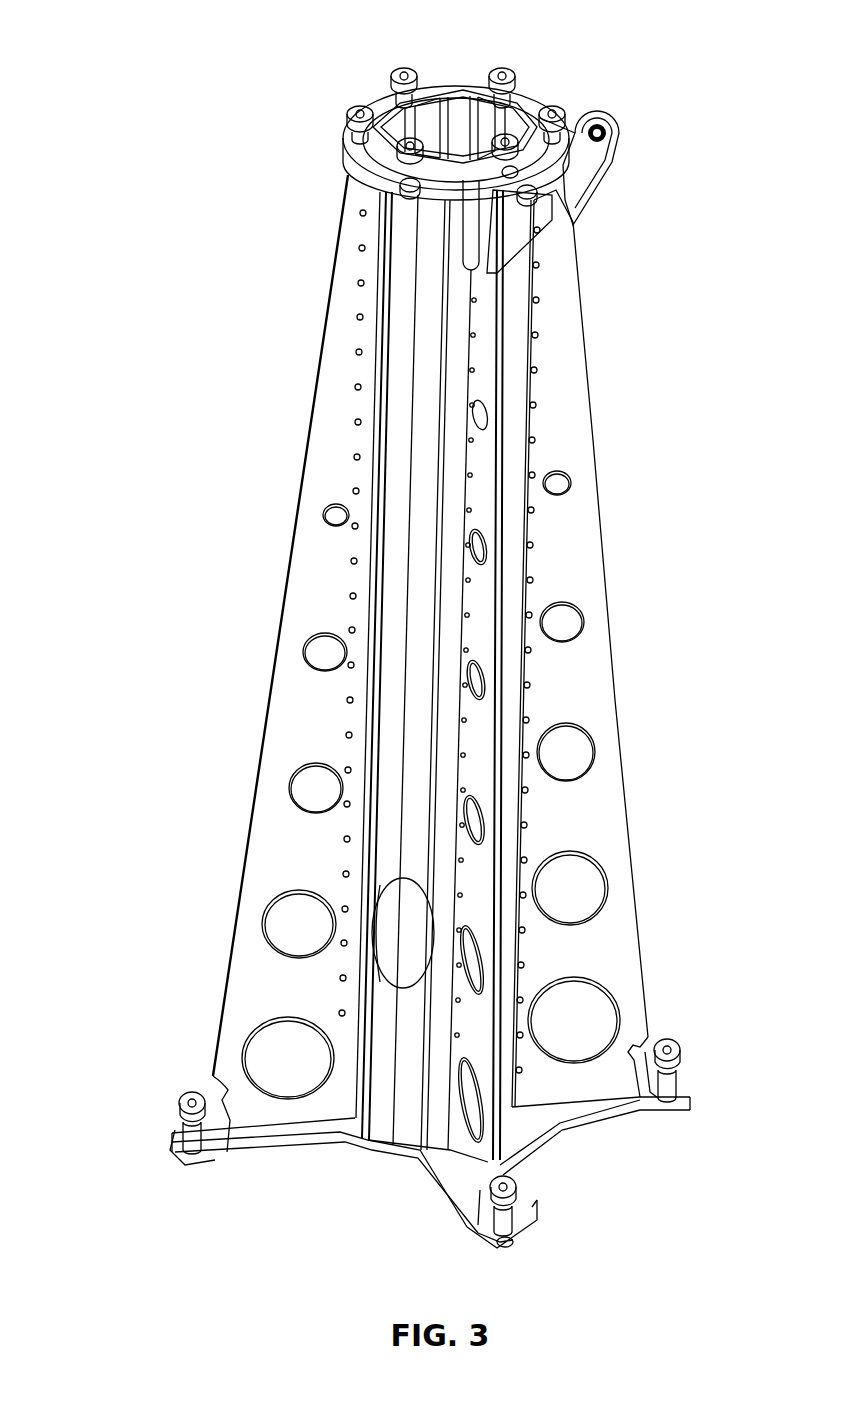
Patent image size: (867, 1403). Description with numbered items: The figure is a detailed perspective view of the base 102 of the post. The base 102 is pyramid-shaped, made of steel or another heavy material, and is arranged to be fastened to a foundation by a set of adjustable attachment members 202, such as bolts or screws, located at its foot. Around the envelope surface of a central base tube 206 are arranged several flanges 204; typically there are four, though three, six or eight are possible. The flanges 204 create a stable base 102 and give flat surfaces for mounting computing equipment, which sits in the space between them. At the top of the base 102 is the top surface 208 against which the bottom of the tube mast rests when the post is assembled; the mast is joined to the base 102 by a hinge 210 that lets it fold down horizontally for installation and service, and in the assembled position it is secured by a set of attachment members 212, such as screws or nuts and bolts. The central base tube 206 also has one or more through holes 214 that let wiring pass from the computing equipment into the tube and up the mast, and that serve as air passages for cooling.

The base 102 is at (138, 104).
The adjustable attachment members 202 is at (667, 1042).
The flanges 204 is at (590, 678).
The central base tube 206 is at (388, 1117).
The top surface 208 is at (533, 107).
The hinge 210 is at (600, 190).
The attachment members 212 is at (403, 73).
The through holes 214 is at (398, 943).